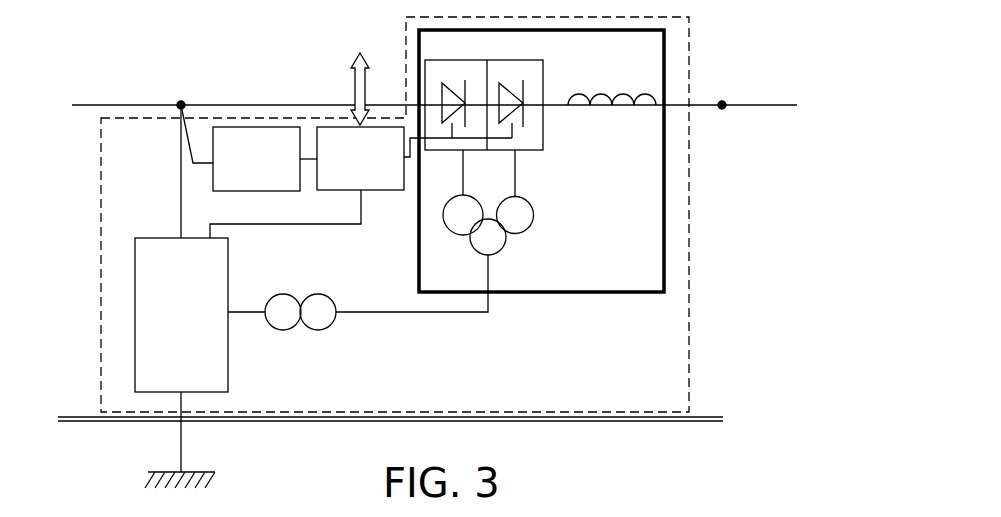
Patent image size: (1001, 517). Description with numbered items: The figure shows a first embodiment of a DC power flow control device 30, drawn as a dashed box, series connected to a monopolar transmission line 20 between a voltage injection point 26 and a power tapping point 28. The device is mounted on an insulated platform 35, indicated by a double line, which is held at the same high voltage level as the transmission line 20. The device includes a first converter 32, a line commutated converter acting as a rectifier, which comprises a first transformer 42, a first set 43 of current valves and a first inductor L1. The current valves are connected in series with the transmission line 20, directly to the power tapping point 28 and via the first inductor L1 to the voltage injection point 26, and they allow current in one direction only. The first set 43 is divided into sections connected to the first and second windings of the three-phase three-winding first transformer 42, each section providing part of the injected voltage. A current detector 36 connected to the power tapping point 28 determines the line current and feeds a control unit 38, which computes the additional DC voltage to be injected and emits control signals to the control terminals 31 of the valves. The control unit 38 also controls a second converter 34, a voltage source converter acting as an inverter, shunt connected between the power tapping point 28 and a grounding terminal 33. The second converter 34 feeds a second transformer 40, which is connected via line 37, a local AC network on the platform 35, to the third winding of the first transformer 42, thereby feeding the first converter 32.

The transmission line 20 is at (242, 105).
The voltage injection point 26 is at (722, 105).
The power tapping point 28 is at (181, 105).
The DC power flow control device 30 is at (745, 257).
The control terminals 31 is at (452, 125).
The first converter 32 is at (592, 292).
The grounding terminal 33 is at (189, 440).
The second converter 34 is at (181, 315).
The insulated platform 35 is at (687, 421).
The current detector 36 is at (256, 159).
The line 37 is at (377, 313).
The control unit 38 is at (360, 158).
The second transformer 40 is at (282, 294).
The first transformer 42 is at (478, 213).
The first set of current valves 43 is at (484, 89).
The first inductor L1 is at (612, 80).